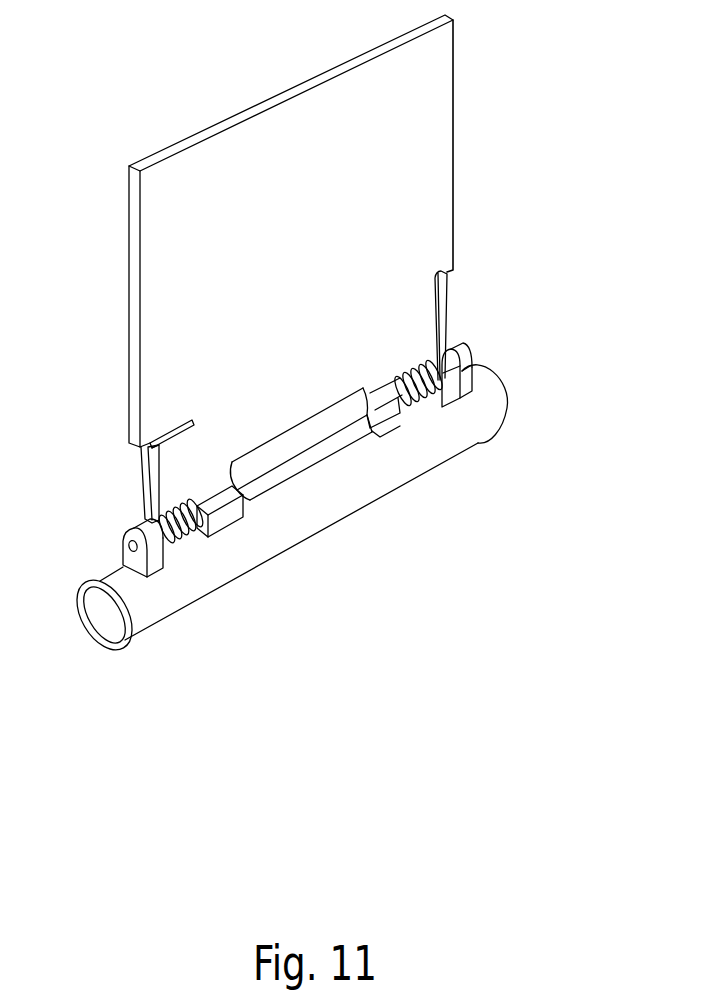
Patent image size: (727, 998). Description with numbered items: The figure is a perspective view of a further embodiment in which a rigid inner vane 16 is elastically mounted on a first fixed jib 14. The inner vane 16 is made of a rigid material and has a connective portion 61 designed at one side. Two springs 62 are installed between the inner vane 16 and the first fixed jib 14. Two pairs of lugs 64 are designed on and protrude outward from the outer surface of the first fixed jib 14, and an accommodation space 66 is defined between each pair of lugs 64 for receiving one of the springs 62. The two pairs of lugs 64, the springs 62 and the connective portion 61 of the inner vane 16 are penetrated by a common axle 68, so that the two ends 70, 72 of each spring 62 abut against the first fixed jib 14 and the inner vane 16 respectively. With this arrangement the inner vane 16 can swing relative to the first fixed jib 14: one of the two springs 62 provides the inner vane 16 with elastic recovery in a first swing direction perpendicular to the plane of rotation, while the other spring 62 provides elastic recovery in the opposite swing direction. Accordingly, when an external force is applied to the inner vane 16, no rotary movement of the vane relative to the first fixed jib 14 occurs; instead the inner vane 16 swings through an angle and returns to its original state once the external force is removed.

The first fixed jib 14 is at (487, 380).
The inner vane 16 is at (147, 272).
The connective portion 61 is at (307, 462).
The springs 62 is at (183, 533).
The lugs 64 is at (155, 563).
The accommodation space 66 is at (442, 405).
The axle 68 is at (125, 552).
The end of spring 70 is at (230, 530).
The end of spring 72 is at (178, 424).